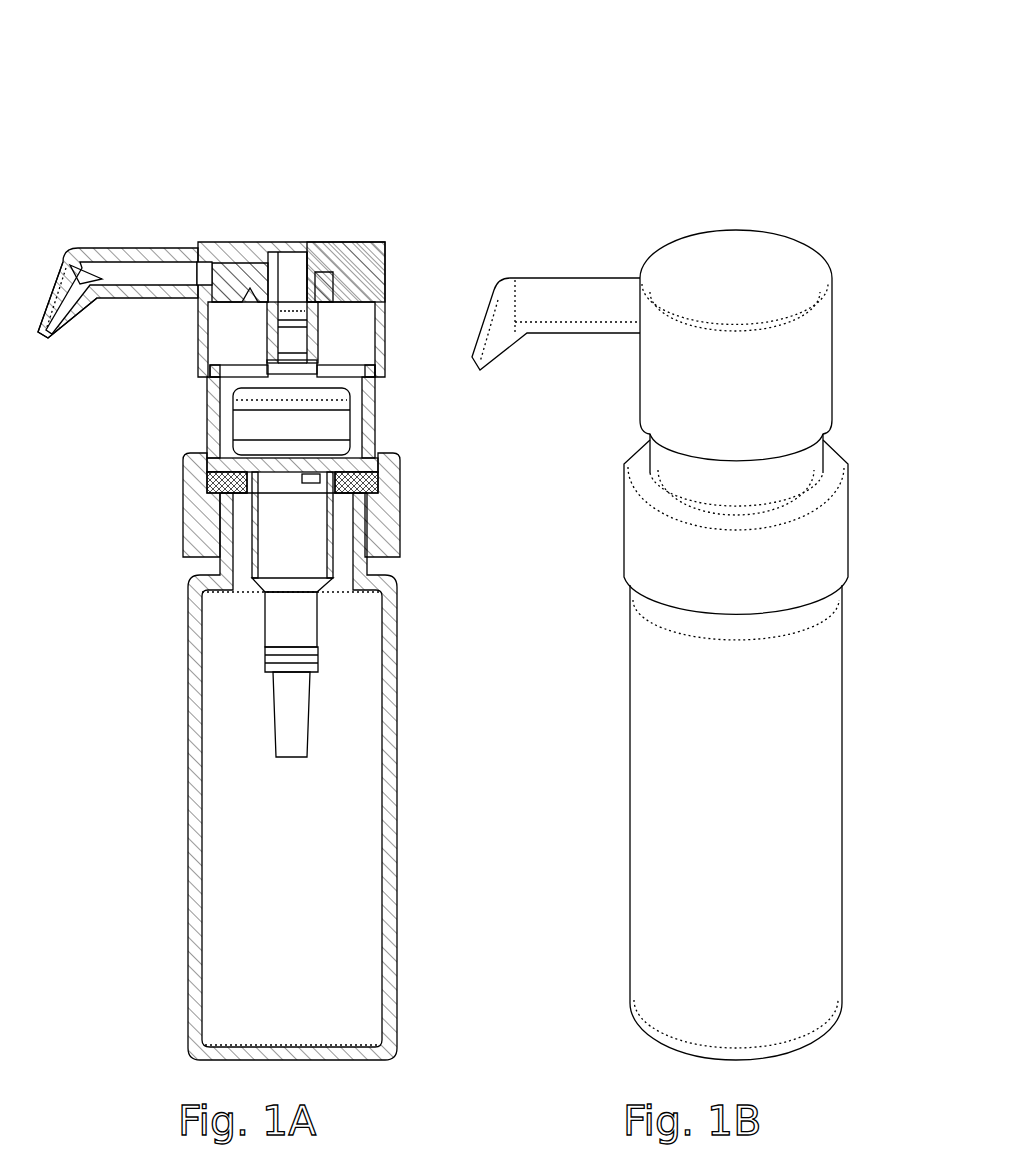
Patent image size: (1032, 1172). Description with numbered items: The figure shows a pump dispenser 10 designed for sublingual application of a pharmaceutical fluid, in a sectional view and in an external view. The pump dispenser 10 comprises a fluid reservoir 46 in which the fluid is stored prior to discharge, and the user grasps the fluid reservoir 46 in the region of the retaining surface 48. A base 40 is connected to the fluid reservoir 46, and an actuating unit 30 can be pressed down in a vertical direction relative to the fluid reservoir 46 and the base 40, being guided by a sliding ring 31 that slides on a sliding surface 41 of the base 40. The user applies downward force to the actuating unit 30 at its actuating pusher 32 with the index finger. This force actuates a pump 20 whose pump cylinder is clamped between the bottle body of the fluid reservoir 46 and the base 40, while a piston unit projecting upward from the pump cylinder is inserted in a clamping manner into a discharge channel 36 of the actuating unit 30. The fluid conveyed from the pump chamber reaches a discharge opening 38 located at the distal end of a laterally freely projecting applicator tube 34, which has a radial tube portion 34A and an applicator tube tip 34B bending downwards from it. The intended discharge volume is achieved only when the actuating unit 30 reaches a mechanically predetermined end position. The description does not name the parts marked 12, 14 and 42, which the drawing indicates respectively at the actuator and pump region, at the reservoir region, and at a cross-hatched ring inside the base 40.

In FIG. 1A, the pump dispenser 10 is at (93, 105).
In FIG. 1B, the pump dispenser 10 is at (578, 108).
In FIG. 1A, the pump assembly 12 is at (175, 348).
In FIG. 1A, the container 14 is at (177, 633).
In FIG. 1A, the pump 20 is at (262, 518).
In FIG. 1A, the actuating unit 30 is at (342, 222).
In FIG. 1B, the actuating unit 30 is at (806, 226).
In FIG. 1A, the sliding ring 31 is at (377, 343).
In FIG. 1A, the actuating pusher 32 is at (277, 242).
In FIG. 1B, the actuating pusher 32 is at (703, 258).
In FIG. 1B, the applicator tube 34 is at (572, 300).
In FIG. 1A, the radial tube portion 34A is at (130, 250).
In FIG. 1A, the applicator tube tip 34B is at (60, 268).
In FIG. 1A, the discharge channel 36 is at (307, 330).
In FIG. 1A, the discharge opening 38 is at (50, 335).
In FIG. 1A, the base 40 is at (400, 562).
In FIG. 1B, the base 40 is at (845, 458).
In FIG. 1A, the sliding surface 41 is at (370, 417).
In FIG. 1A, the seal 42 is at (378, 528).
In FIG. 1A, the fluid reservoir 46 is at (398, 727).
In FIG. 1B, the fluid reservoir 46 is at (848, 680).
In FIG. 1A, the retaining surface 48 is at (390, 777).
In FIG. 1B, the retaining surface 48 is at (785, 760).